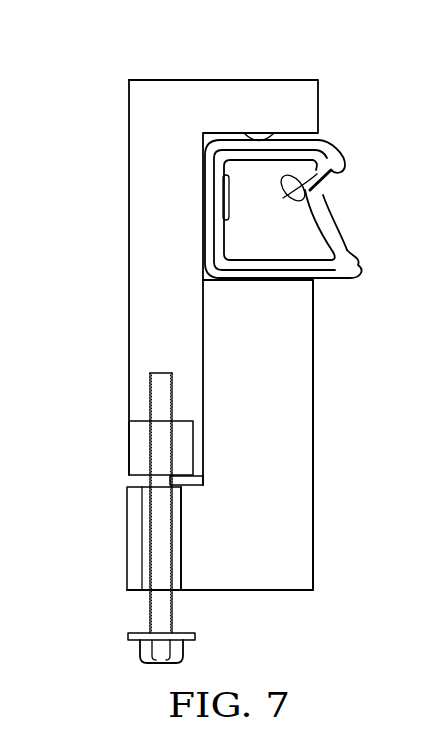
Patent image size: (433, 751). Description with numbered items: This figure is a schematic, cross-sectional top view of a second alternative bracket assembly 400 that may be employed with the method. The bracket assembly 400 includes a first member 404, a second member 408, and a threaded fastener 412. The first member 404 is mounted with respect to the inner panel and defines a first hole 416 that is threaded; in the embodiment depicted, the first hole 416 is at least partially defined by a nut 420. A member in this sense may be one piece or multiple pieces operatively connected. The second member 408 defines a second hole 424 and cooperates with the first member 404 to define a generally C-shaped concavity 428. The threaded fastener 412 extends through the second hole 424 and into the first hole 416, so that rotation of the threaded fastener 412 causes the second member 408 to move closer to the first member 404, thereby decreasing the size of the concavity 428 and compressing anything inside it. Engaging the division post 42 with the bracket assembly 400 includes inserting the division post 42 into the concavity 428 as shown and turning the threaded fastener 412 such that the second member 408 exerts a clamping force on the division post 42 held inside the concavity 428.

The bracket assembly 400 is at (125, 58).
The first member 404 is at (138, 222).
The second member 408 is at (293, 415).
The concavity 428 is at (270, 140).
The division post 42 is at (285, 268).
The first hole 416 is at (155, 459).
The nut 420 is at (138, 460).
The second hole 424 is at (147, 541).
The threaded fastener 412 is at (160, 610).